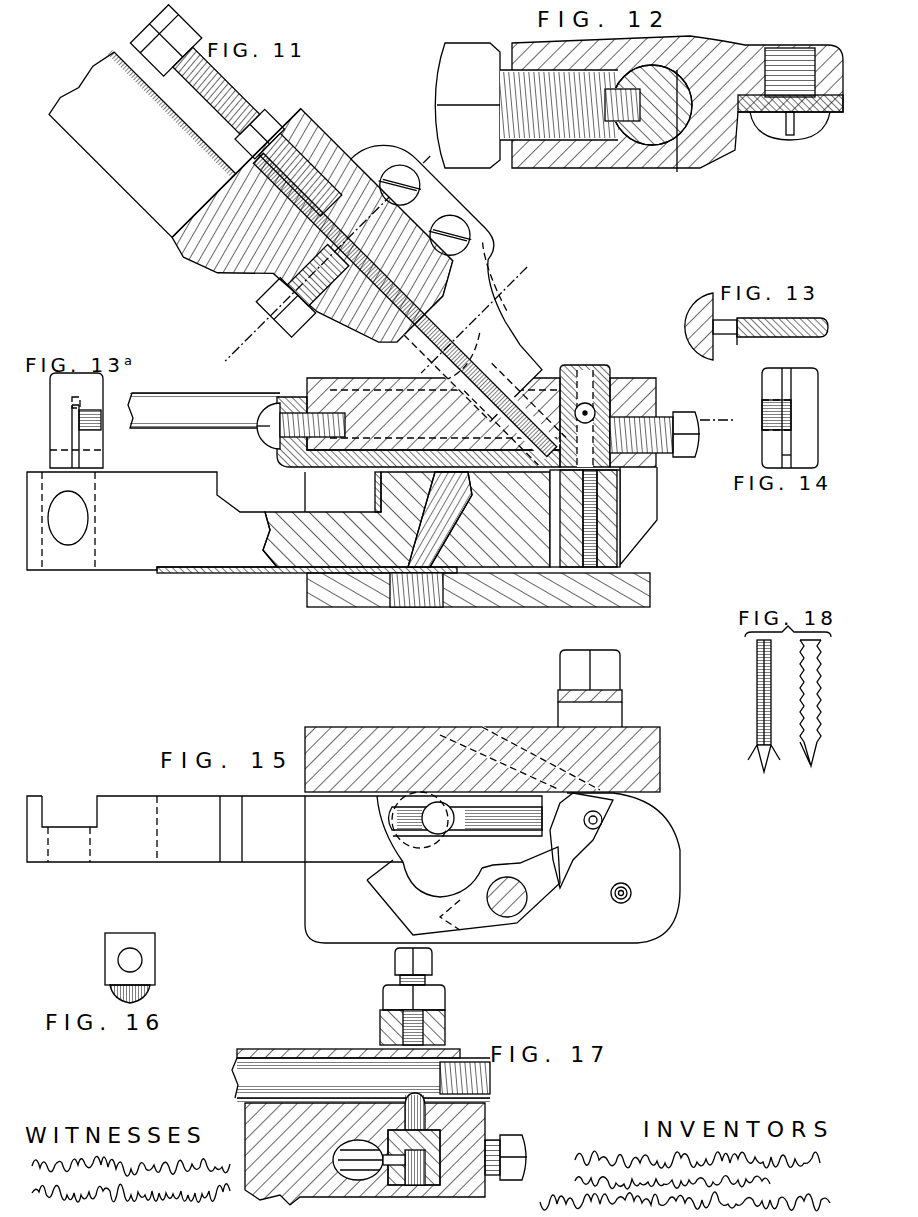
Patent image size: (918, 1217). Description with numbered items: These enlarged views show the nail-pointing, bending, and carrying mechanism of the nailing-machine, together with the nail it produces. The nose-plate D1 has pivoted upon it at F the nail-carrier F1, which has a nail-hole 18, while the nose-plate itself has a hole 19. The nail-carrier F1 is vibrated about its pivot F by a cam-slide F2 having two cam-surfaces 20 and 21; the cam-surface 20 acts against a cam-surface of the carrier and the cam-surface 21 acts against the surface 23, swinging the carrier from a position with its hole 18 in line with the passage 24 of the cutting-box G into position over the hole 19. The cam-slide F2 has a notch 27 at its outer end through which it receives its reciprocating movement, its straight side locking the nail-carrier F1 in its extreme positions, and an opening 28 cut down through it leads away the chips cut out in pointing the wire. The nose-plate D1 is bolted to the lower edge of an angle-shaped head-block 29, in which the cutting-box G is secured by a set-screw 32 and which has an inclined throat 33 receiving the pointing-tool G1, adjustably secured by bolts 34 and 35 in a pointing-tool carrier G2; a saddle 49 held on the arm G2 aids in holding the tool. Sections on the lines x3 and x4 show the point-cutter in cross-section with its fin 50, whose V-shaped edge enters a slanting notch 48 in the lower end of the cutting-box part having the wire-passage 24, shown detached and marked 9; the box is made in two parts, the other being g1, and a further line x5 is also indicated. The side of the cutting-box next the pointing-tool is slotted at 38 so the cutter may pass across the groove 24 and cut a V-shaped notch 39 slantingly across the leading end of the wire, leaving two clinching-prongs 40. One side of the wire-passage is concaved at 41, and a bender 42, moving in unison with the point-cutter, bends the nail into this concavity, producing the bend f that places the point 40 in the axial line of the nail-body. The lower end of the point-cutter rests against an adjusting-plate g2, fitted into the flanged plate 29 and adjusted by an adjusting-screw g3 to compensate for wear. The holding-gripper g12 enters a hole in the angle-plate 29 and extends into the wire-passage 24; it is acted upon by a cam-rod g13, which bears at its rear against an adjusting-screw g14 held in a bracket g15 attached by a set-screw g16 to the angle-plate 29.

In FIG. 12, the bolt 34 is at (446, 74).
In FIG. 11, the bolt 34 is at (268, 296).
In FIG. 11, the bolt 35 is at (224, 86).
In FIG. 12, the saddle 49 is at (677, 172).
In FIG. 11, the saddle 49 is at (393, 258).
In FIG. 12, the bender 42 is at (760, 135).
In FIG. 13, the bender 42 is at (816, 322).
In FIG. 13, the fin 50 is at (720, 332).
In FIG. 13, the cutting-box G is at (608, 372).
In FIG. 12, the pointing-tool G1 is at (640, 72).
In FIG. 13, the pointing-tool G1 is at (686, 290).
In FIG. 11, the pointing-tool G1 is at (430, 338).
In FIG. 12, the pointing-tool carrier G2 is at (580, 170).
In FIG. 11, the pointing-tool carrier G2 is at (254, 203).
In FIG. 11, the section line x3 is at (324, 257).
In FIG. 11, the section line x4 is at (485, 322).
In FIG. 13, the axis x5 is at (745, 415).
In FIG. 13, the inclined throat 33 is at (448, 371).
In FIG. 17, the inclined throat 33 is at (369, 1160).
In FIG. 14, the wire-passage 24 is at (787, 375).
In FIG. 13, the wire-passage 24 is at (590, 372).
In FIG. 13, the angle-shaped head-block 29 is at (657, 392).
In FIG. 15, the angle-shaped head-block 29 is at (645, 742).
In FIG. 17, the angle-shaped head-block 29 is at (250, 1118).
In FIG. 13, the set-screw 32 is at (688, 449).
In FIG. 17, the set-screw 32 is at (512, 1138).
In FIG. 13A, the slot 38 is at (74, 460).
In FIG. 13, the slot 38 is at (573, 439).
In FIG. 13, the concavity 41 is at (595, 454).
In FIG. 13, the nail-hole 18 is at (598, 496).
In FIG. 15, the nail-hole 18 is at (603, 823).
In FIG. 15, the hole 19 is at (632, 894).
In FIG. 15, the cam-surface 20 is at (540, 847).
In FIG. 15, the cam-surface 21 is at (392, 848).
In FIG. 15, the surface 23 is at (410, 866).
In FIG. 15, the notch 27 is at (68, 807).
In FIG. 13, the opening 28 is at (406, 539).
In FIG. 15, the opening 28 is at (459, 820).
In FIG. 14, the clamp block 9 is at (798, 398).
In FIG. 17, the clamp block 9 is at (430, 1187).
In FIG. 14, the slanting notch 48 is at (790, 460).
In FIG. 18, the V-shaped notch 39 is at (762, 750).
In FIG. 18, the clinching-prongs 40 is at (757, 752).
In FIG. 18, the bend f is at (800, 730).
In FIG. 15, the pivot F is at (517, 905).
In FIG. 13, the nail-carrier F1 is at (600, 532).
In FIG. 15, the nail-carrier F1 is at (568, 848).
In FIG. 13, the cam-slide F2 is at (242, 522).
In FIG. 15, the cam-slide F2 is at (278, 864).
In FIG. 13, the nose-plate D1 is at (645, 590).
In FIG. 15, the nose-plate D1 is at (680, 860).
In FIG. 13A, the cutting-box part g1 is at (62, 400).
In FIG. 17, the cutting-box part g1 is at (398, 1187).
In FIG. 13, the adjusting-plate g2 is at (513, 482).
In FIG. 16, the adjusting-plate g2 is at (110, 992).
In FIG. 13, the adjusting-screw g3 is at (268, 445).
In FIG. 17, the holding-gripper g12 is at (488, 1088).
In FIG. 13, the cam-rod g13 is at (204, 410).
In FIG. 17, the cam-rod g13 is at (240, 1072).
In FIG. 17, the adjusting-screw g14 is at (447, 1044).
In FIG. 15, the bracket g15 is at (608, 708).
In FIG. 17, the bracket g15 is at (445, 1010).
In FIG. 15, the set-screw g16 is at (572, 668).